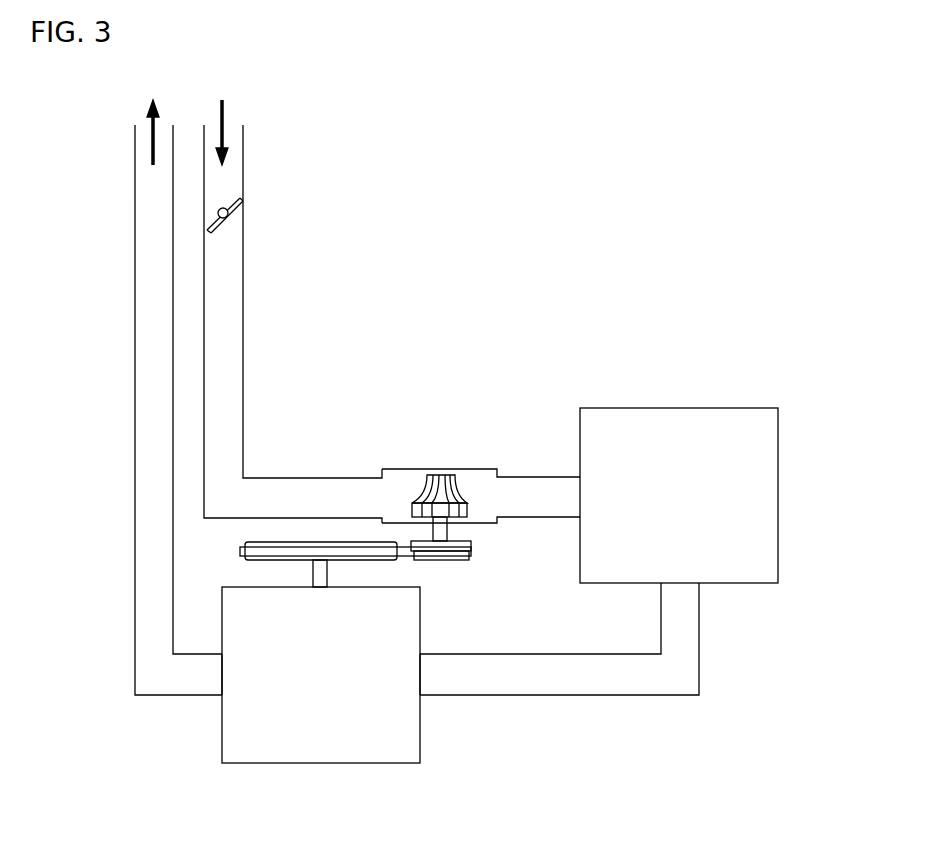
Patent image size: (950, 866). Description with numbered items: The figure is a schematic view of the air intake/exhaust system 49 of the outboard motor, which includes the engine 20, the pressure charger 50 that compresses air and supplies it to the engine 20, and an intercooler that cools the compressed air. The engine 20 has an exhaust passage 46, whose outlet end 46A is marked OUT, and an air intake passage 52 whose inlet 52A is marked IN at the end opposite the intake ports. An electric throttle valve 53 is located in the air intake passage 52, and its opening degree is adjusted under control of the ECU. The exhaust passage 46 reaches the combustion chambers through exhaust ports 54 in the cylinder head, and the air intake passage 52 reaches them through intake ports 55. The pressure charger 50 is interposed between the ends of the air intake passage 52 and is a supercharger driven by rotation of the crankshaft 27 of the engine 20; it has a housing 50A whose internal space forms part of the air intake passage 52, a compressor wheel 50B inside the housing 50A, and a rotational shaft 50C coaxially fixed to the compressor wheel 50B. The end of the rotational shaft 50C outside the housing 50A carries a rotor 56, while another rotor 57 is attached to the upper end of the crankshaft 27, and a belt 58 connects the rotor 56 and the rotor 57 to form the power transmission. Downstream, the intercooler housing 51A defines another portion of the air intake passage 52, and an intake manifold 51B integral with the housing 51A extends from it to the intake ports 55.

The air intake/exhaust system 49 is at (750, 108).
The exhaust passage 46 is at (135, 420).
The exhaust outlet 46A is at (140, 127).
The air intake passage 52 is at (244, 265).
The inlet 52A is at (238, 127).
The electric throttle valve 53 is at (232, 208).
The pressure charger 50 is at (485, 469).
The housing 50A is at (439, 475).
The compressor wheel 50B is at (468, 510).
The rotational shaft 50C is at (447, 532).
The rotor 57 is at (352, 540).
The belt 58 is at (405, 545).
The rotor 56 is at (452, 560).
The crankshaft 27 is at (313, 573).
The engine 20 is at (322, 763).
The exhaust ports 54 is at (215, 677).
The intake ports 55 is at (428, 677).
The housing 51A is at (778, 494).
The intake manifold 51B is at (633, 695).